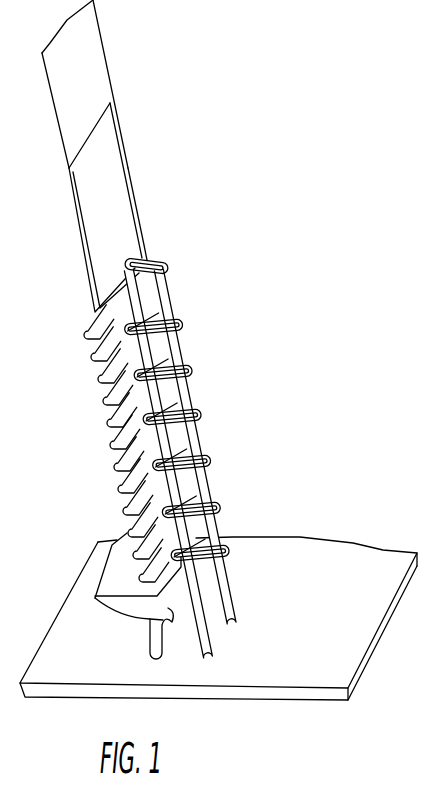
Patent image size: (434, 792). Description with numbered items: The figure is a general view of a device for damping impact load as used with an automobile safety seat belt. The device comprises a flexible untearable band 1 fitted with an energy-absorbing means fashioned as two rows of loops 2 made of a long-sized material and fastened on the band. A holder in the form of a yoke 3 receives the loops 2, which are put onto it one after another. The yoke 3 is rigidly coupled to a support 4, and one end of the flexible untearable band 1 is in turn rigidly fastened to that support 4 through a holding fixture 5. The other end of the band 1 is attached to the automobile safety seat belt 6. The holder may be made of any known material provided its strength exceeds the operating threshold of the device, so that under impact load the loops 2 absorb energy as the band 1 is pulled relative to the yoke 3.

The flexible untearable band 1 is at (128, 240).
The loops 2 is at (177, 323).
The yoke 3 is at (184, 394).
The support 4 is at (362, 556).
The holding fixture 5 is at (150, 643).
The automobile safety seat belt 6 is at (53, 98).